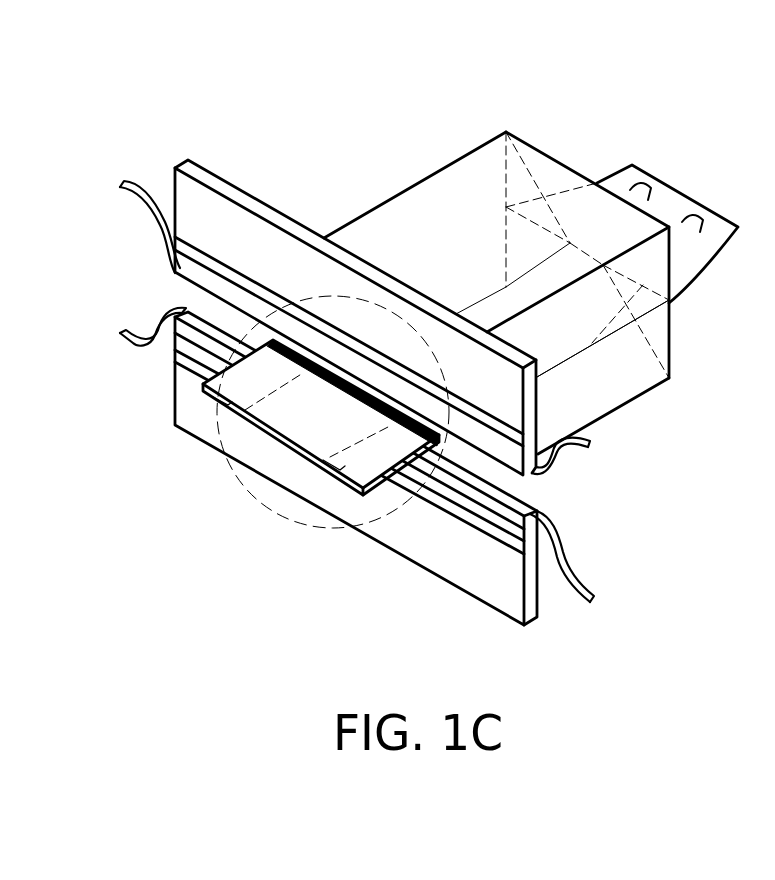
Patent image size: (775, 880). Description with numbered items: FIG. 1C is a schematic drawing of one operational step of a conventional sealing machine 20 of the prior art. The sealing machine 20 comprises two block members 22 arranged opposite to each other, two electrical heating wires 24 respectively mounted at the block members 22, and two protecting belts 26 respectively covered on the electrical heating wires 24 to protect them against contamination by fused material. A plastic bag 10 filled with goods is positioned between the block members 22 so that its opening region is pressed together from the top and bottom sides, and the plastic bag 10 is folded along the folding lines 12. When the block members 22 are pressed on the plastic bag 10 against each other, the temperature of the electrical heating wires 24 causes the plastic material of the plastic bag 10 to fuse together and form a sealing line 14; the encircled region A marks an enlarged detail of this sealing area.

The plastic bag 10 is at (538, 162).
The folding line 12 is at (587, 352).
The sealing line 14 is at (345, 365).
The sealing machine 20 is at (349, 342).
The block member 22 is at (290, 223).
The electrical heating wire 24 is at (120, 184).
The protecting belt 26 is at (527, 510).
The detail region A is at (290, 522).